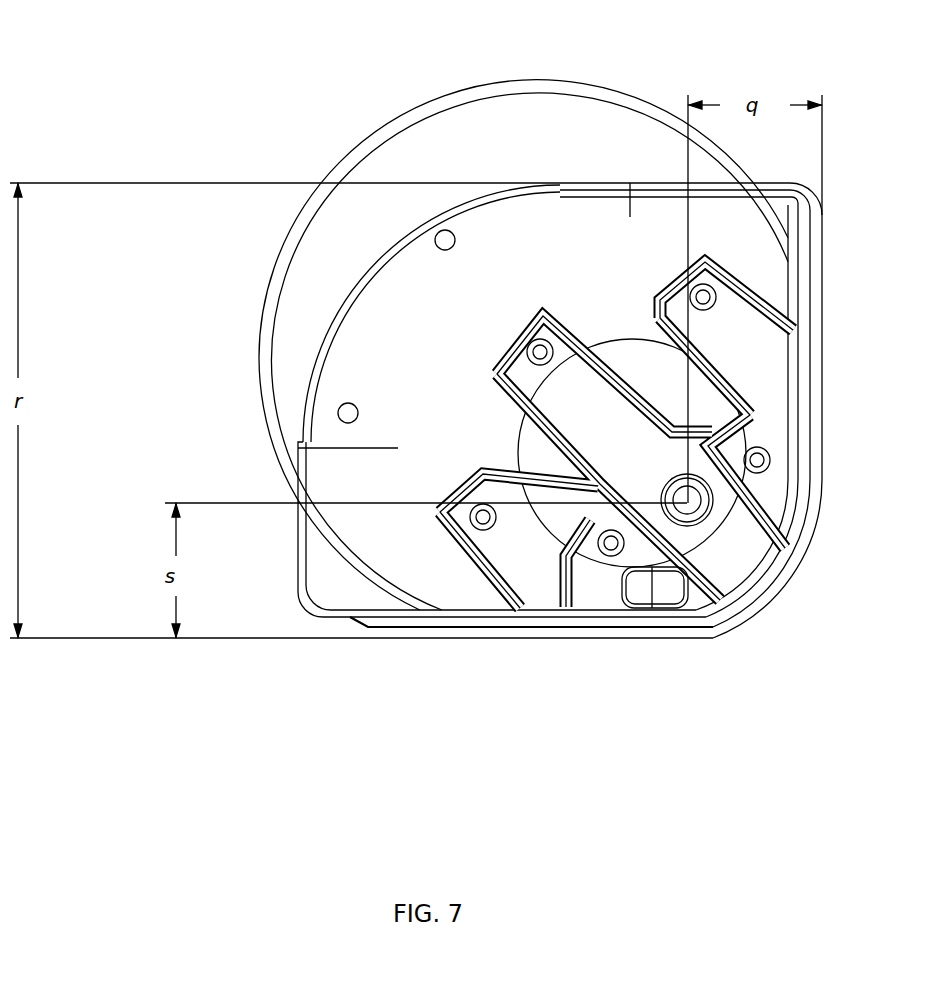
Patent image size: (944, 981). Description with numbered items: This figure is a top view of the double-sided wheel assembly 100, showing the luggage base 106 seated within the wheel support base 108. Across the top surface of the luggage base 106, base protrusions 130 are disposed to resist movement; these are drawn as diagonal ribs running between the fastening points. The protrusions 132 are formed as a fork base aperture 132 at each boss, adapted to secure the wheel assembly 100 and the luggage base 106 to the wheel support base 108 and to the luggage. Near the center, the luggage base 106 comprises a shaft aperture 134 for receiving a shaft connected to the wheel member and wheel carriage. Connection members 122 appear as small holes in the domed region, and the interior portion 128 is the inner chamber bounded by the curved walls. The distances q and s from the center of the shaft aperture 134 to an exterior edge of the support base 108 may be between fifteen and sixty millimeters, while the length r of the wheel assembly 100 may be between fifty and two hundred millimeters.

The double-sided wheel assembly 100 is at (113, 43).
The luggage base 106 is at (620, 290).
The wheel support base 108 is at (747, 610).
The connection members 122 is at (435, 240).
The interior portion 128 is at (406, 462).
The base protrusions 130 is at (538, 379).
The fork base aperture 132 is at (540, 346).
The shaft aperture 134 is at (698, 512).